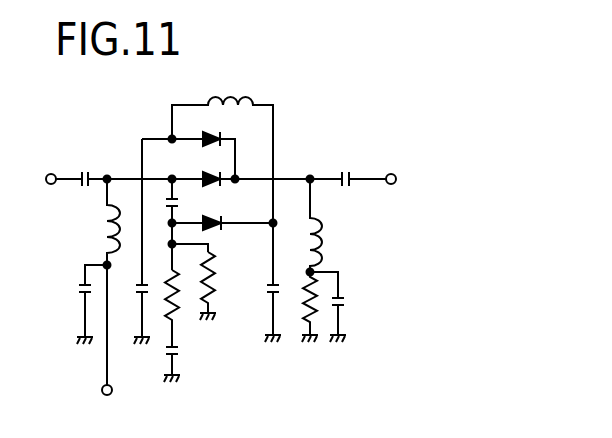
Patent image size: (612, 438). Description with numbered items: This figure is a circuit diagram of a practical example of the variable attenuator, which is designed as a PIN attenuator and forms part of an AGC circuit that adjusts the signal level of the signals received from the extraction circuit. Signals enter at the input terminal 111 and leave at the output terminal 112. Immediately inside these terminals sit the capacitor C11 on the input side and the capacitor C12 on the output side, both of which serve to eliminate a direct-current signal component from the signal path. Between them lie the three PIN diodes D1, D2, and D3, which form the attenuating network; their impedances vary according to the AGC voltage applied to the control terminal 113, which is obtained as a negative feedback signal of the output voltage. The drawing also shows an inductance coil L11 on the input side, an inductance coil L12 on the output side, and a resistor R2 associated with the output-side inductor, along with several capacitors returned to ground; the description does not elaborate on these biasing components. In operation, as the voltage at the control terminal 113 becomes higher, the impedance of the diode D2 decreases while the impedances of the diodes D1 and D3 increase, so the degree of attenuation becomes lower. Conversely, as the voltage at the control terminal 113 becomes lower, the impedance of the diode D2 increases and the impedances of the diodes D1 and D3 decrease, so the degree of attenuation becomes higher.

The input terminal 111 is at (47, 175).
The output terminal 112 is at (409, 169).
The control terminal 113 is at (99, 391).
The capacitor C11 is at (87, 165).
The capacitor C12 is at (352, 166).
The input inductor L11 is at (92, 222).
The output inductor L12 is at (335, 225).
The PIN diode D1 is at (188, 143).
The PIN diode D2 is at (213, 167).
The PIN diode D3 is at (224, 211).
The resistor R2 is at (300, 307).